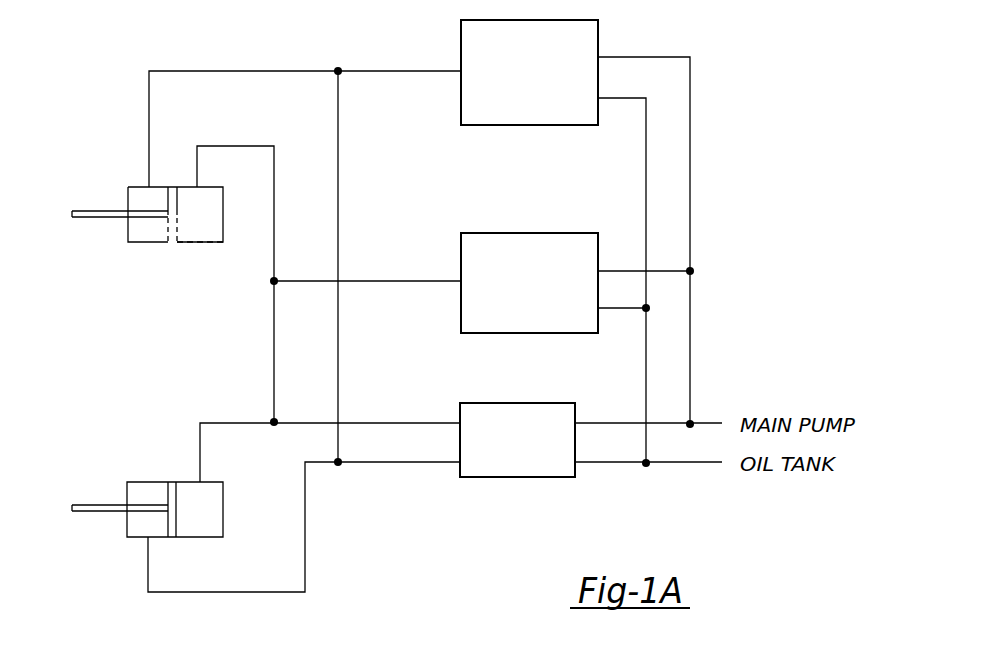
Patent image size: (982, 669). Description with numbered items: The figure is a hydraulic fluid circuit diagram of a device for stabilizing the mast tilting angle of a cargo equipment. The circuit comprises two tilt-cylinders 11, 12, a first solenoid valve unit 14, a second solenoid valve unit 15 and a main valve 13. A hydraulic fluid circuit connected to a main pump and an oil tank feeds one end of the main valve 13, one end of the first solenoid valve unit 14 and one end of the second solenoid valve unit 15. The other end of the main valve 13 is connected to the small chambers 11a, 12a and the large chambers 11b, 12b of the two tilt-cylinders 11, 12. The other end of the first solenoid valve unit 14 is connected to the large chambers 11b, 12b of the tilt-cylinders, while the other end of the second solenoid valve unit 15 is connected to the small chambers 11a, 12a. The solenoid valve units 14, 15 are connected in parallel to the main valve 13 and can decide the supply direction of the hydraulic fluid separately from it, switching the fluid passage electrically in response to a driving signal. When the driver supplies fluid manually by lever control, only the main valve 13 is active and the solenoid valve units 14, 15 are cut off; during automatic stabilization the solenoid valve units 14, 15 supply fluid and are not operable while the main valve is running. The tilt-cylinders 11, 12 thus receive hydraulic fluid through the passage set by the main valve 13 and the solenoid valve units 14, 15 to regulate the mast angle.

The tilt-cylinder 11 is at (128, 188).
The small chamber 11a is at (150, 233).
The large chamber 11b is at (217, 202).
The tilt-cylinder 12 is at (127, 488).
The small chamber 12a is at (137, 530).
The large chamber 12b is at (213, 505).
The main valve 13 is at (488, 403).
The first solenoid valve unit 14 is at (461, 258).
The second solenoid valve unit 15 is at (461, 46).